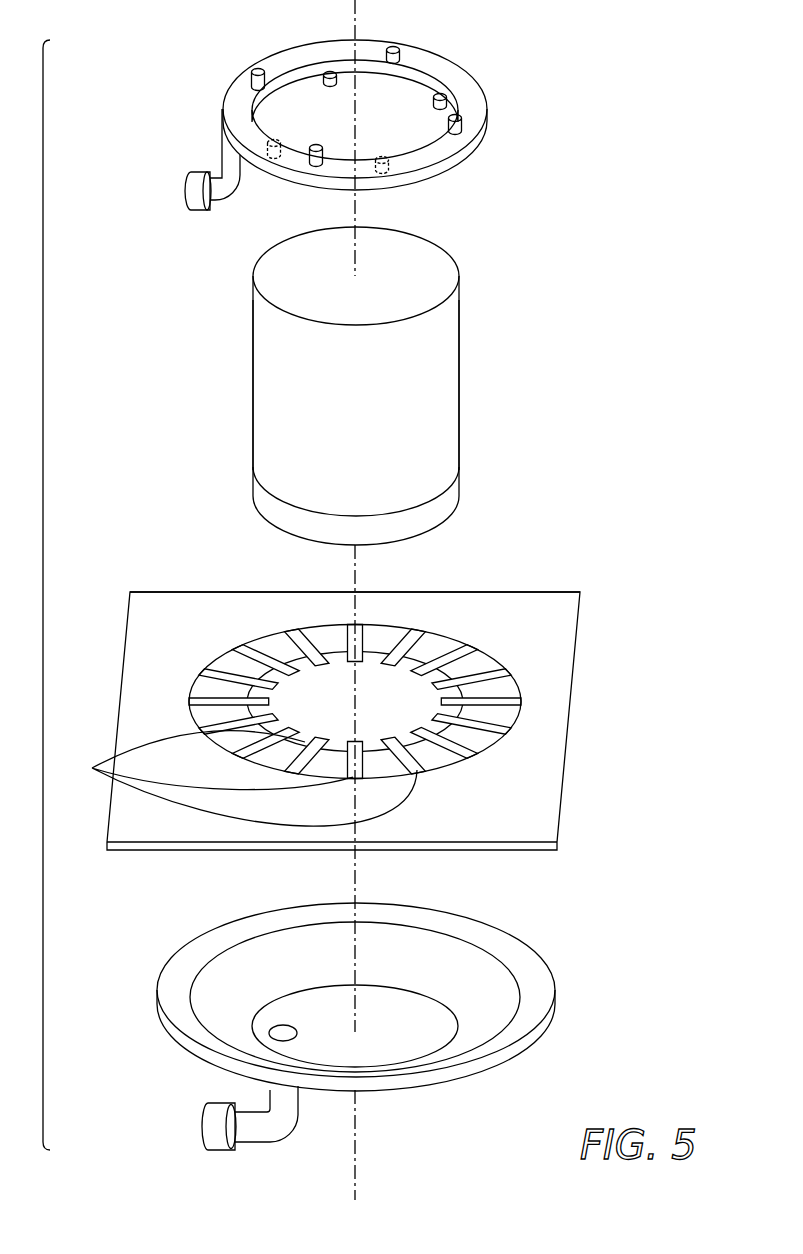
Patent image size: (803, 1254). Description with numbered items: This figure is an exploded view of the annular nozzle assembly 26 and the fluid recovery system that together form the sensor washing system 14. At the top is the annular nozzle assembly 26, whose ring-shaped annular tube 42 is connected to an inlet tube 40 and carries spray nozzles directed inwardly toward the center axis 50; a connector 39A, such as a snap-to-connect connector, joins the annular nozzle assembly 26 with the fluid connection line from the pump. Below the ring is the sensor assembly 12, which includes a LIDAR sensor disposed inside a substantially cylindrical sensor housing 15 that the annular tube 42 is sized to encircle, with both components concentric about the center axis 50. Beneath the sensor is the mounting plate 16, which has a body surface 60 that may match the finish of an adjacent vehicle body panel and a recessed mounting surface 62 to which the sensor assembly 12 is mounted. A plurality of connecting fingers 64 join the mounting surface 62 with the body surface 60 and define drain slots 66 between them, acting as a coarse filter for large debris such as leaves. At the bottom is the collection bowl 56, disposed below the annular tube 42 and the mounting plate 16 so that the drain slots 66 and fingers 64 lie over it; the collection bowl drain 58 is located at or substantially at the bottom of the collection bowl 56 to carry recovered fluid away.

The sensor assembly 12 is at (463, 325).
The sensor washing system 14 is at (43, 558).
The sensor housing 15 is at (461, 394).
The mounting plate 16 is at (532, 606).
The annular nozzle assembly 26 is at (487, 86).
The connector 39A is at (193, 212).
The inlet tube 40 is at (222, 160).
The annular tube 42 is at (457, 63).
The center axis 50 is at (356, 1150).
The collection bowl 56 is at (543, 973).
The collection bowl drain 58 is at (262, 1143).
The body surface 60 is at (185, 641).
The mounting surface 62 is at (403, 716).
The connecting fingers 64 is at (380, 747).
The drain slots 66 is at (240, 778).